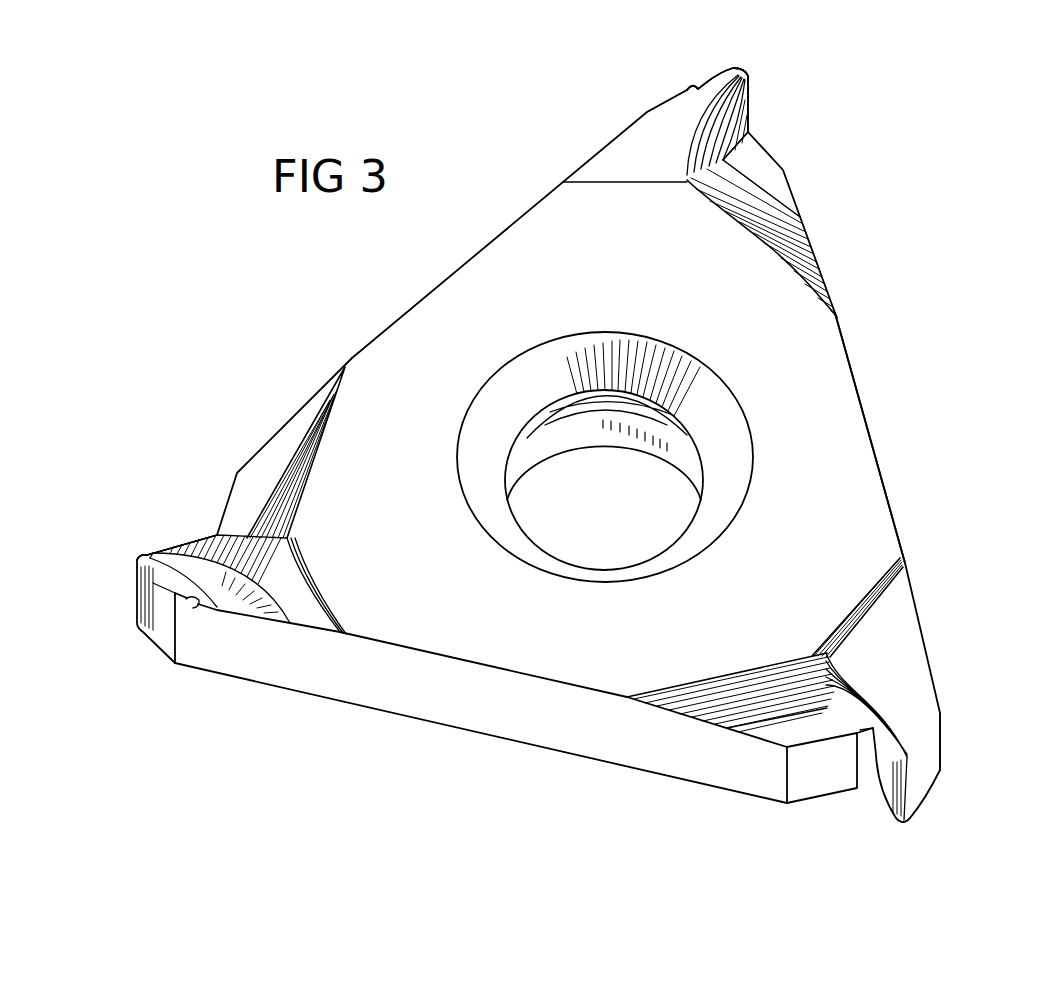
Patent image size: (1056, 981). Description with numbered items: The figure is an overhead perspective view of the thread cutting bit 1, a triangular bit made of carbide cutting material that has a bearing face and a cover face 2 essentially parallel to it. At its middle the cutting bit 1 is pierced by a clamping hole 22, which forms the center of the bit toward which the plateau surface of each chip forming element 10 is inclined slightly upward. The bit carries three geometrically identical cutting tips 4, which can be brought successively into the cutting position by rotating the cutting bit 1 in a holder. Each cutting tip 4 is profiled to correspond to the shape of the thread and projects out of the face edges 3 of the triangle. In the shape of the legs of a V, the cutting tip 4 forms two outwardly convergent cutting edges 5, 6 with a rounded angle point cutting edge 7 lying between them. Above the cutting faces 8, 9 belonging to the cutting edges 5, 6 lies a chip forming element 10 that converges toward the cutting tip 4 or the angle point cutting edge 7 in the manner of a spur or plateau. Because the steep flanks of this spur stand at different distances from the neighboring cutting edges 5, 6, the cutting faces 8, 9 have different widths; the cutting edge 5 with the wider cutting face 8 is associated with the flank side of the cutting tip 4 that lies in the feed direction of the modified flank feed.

The thread cutting bit 1 is at (875, 388).
The cover face 2 is at (845, 478).
The face edges 3 is at (620, 113).
The cutting tips 4 is at (778, 66).
The cutting edge 5 is at (717, 73).
The cutting edge 6 is at (746, 114).
The angle point cutting edge 7 is at (147, 557).
The cutting face 8 is at (690, 88).
The cutting face 9 is at (748, 92).
The chip forming element 10 is at (645, 152).
The clamping hole 22 is at (581, 511).